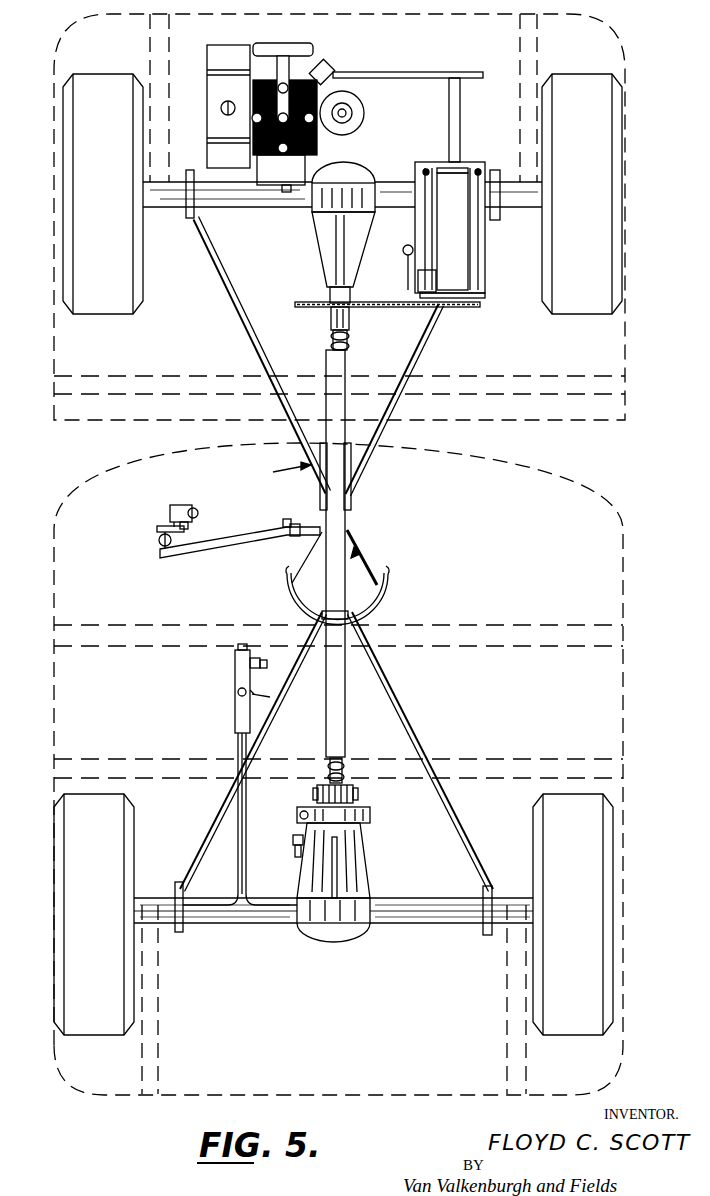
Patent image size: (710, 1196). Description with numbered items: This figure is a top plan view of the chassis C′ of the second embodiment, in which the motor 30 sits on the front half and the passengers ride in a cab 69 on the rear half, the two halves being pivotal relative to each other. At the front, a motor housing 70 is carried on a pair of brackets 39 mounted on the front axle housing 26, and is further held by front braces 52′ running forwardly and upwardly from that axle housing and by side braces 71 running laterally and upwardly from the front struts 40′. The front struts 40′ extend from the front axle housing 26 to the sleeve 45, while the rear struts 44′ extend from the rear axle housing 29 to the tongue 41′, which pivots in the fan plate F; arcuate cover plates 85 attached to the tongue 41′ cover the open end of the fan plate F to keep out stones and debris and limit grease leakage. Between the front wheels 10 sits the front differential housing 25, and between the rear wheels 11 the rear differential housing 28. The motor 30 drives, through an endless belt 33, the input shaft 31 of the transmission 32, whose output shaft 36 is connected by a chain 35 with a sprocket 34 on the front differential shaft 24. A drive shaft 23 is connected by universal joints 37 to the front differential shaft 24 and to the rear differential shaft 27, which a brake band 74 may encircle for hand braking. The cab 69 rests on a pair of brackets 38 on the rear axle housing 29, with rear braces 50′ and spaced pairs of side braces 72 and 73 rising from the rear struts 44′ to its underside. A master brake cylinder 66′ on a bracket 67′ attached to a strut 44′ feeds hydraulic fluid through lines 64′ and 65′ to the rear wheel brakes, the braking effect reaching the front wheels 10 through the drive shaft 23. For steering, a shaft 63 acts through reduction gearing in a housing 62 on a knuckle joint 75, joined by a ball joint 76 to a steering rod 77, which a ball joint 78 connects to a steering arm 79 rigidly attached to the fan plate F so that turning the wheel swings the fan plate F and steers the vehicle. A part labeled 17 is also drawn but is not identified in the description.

The front wheels 10 is at (73, 270).
The rear wheels 11 is at (58, 998).
The nut 17 is at (198, 513).
The drive shaft 23 is at (327, 388).
The front differential shaft 24 is at (329, 322).
The front differential housing 25 is at (326, 250).
The front axle housing 26 is at (258, 207).
The rear differential shaft 27 is at (358, 795).
The rear differential housing 28 is at (369, 882).
The rear axle housing 29 is at (457, 904).
The motor 30 is at (333, 72).
The input shaft 31 is at (455, 112).
The transmission 32 is at (477, 270).
The endless belt 33 is at (415, 72).
The sprocket 34 is at (328, 300).
The chain 35 is at (364, 300).
The output shaft 36 is at (478, 302).
The universal joints 37 is at (327, 346).
The brackets 38 is at (184, 926).
The brackets 39 is at (194, 208).
The front struts 40′ is at (212, 268).
The tongue 41′ is at (350, 614).
The rear struts 44′ is at (257, 747).
The sleeve 45 is at (320, 495).
The rear braces 50′ is at (158, 1044).
The front braces 52′ is at (156, 64).
The housing 62 is at (184, 505).
The shaft 63 is at (208, 527).
The line 64′ is at (247, 819).
The line 65′ is at (235, 878).
The master brake cylinder 66′ is at (234, 697).
The bracket 67′ is at (272, 696).
The cab 69 is at (625, 731).
The motor housing 70 is at (627, 357).
The side braces 71 is at (195, 376).
The side braces 72 is at (133, 623).
The side braces 73 is at (106, 759).
The brake band 74 is at (316, 794).
The knuckle joint 75 is at (165, 524).
The ball joint 76 is at (157, 531).
The steering rod 77 is at (195, 549).
The ball joint 78 is at (293, 535).
The steering arm 79 is at (296, 526).
The arcuate cover plates 85 is at (286, 579).
The chassis C′ is at (281, 470).
The fan plate F is at (360, 548).